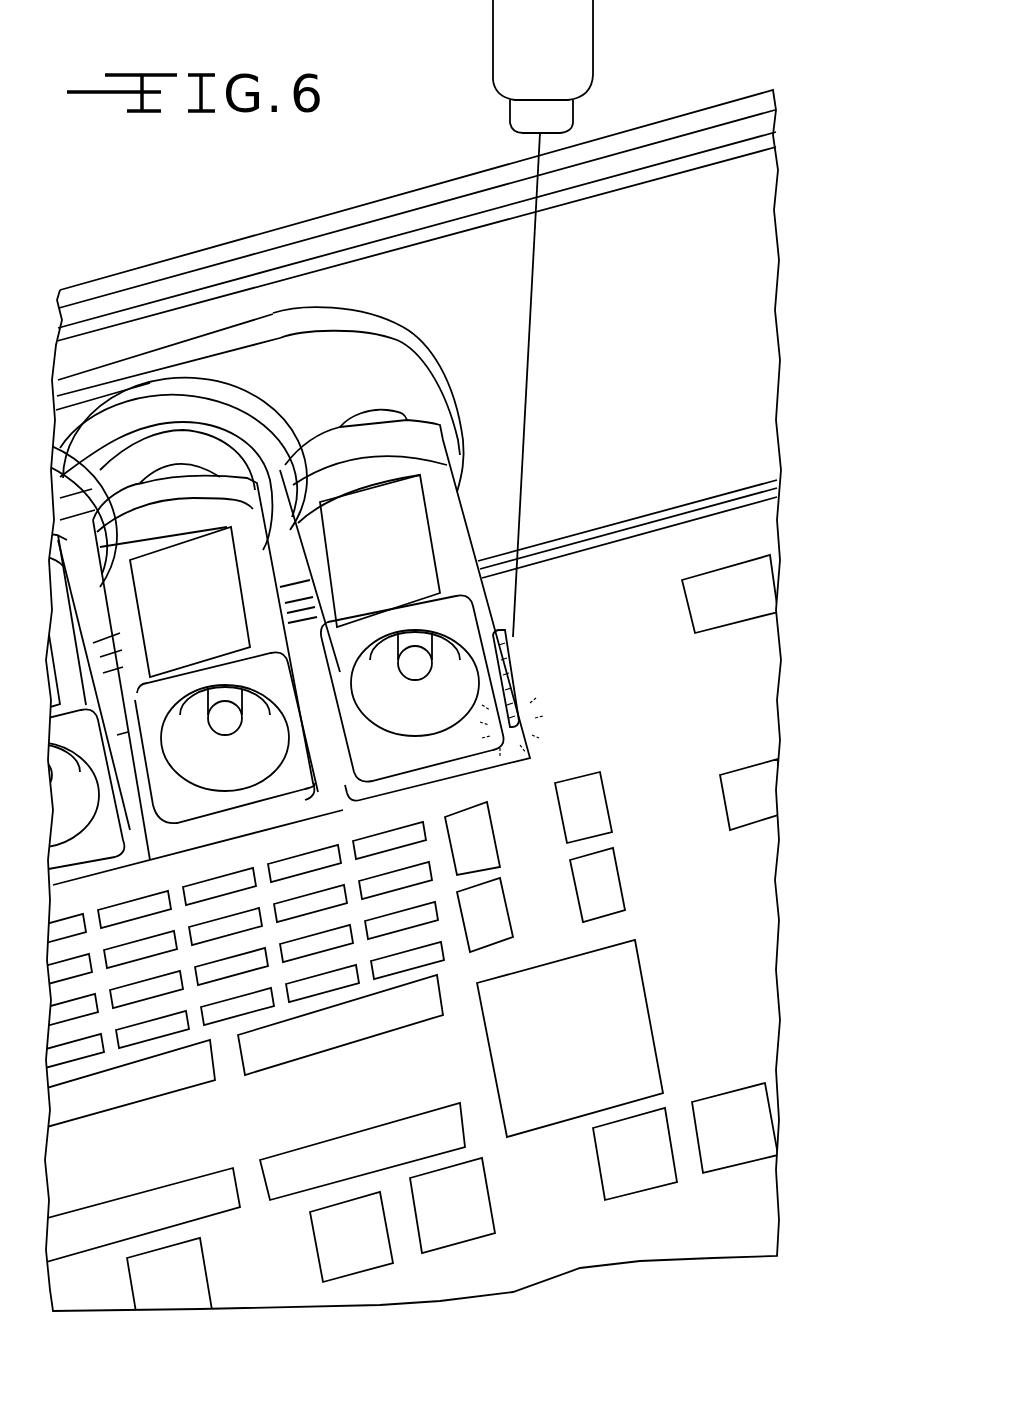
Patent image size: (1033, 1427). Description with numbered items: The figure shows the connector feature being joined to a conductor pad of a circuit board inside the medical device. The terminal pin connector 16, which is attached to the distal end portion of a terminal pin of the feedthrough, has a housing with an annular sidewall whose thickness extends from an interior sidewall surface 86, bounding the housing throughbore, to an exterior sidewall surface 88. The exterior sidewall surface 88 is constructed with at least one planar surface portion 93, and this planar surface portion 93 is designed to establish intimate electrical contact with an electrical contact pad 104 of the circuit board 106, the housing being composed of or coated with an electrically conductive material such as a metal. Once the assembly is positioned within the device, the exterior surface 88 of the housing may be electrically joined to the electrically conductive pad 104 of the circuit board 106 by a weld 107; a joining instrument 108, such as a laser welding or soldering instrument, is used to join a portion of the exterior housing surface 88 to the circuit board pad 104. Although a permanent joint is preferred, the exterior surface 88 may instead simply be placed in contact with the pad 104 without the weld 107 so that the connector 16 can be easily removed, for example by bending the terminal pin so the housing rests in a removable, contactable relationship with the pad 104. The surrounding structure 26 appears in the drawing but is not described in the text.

The terminal pin connector 16 is at (468, 508).
The housing 26 is at (287, 367).
The interior sidewall surface 86 is at (434, 710).
The exterior sidewall surface 88 is at (444, 605).
The planar surface portion 93 is at (214, 602).
The electrical contact pad 104 is at (463, 767).
The circuit board 106 is at (718, 913).
The weld 107 is at (513, 662).
The joining instrument 108 is at (570, 50).